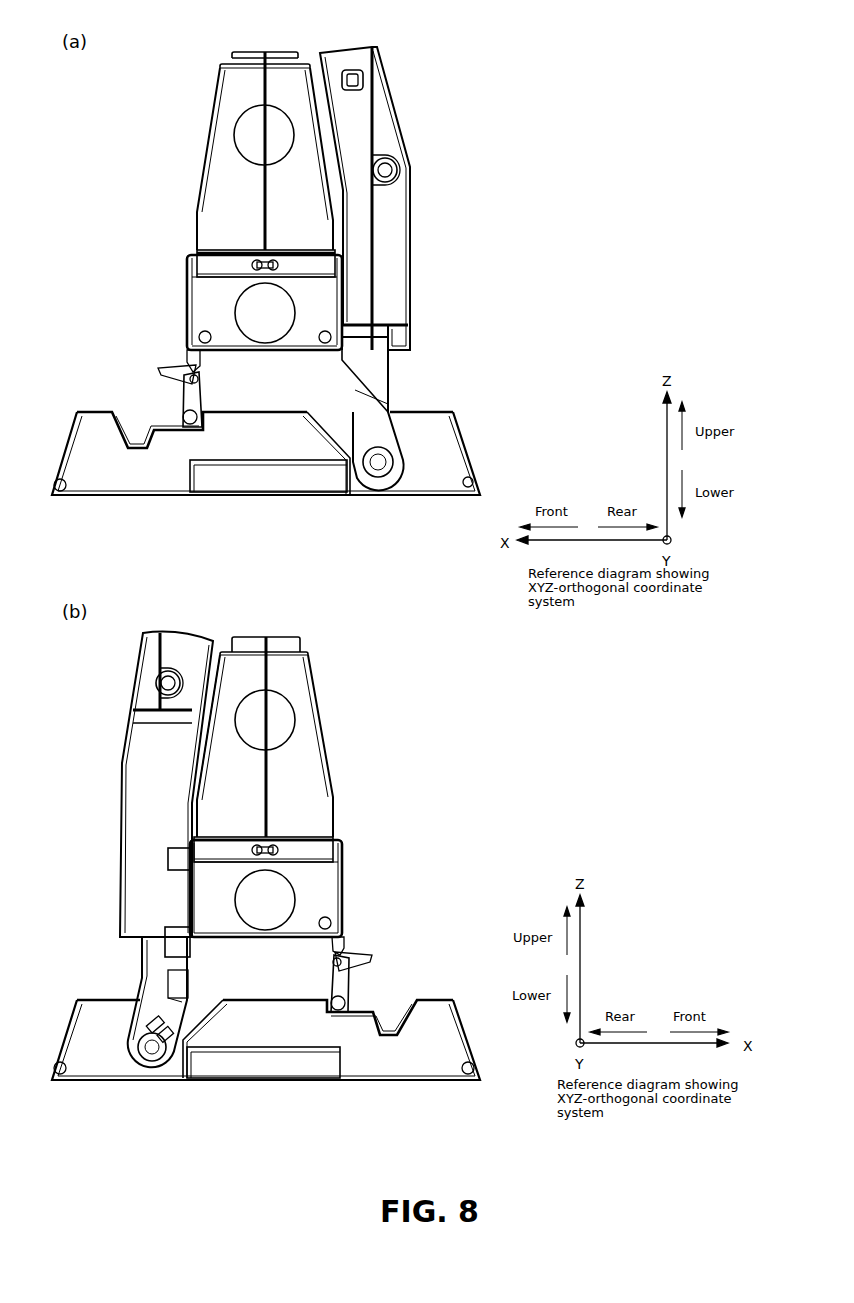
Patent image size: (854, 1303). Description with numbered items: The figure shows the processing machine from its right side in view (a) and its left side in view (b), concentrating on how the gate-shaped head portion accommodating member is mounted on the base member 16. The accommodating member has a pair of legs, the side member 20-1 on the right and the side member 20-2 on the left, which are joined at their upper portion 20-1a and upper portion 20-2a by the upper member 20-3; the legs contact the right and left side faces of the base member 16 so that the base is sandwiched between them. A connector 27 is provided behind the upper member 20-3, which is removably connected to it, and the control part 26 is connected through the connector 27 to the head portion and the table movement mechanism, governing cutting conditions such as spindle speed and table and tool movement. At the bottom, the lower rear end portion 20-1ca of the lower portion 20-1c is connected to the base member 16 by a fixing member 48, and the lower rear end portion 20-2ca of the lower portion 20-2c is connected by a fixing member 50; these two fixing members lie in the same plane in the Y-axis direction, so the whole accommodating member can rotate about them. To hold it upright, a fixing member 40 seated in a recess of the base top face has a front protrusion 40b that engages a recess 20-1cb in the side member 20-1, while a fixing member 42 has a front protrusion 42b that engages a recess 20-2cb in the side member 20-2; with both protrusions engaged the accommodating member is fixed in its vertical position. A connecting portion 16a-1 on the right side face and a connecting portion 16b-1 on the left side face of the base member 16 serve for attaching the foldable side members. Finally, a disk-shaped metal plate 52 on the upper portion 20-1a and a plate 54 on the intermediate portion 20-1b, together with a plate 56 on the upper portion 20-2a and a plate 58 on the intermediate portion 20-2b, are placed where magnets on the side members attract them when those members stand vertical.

The base member 16 is at (266, 478).
The connecting portion 16a-1 is at (233, 480).
The connecting portion 16b-1 is at (273, 1068).
The side member 20-1 is at (305, 298).
The upper portion 20-1a is at (215, 151).
The intermediate portion 20-1b is at (220, 302).
The lower portion 20-1c is at (447, 440).
The lower rear end portion 20-1ca is at (390, 445).
The recess 20-1cb is at (195, 364).
The side member 20-2 is at (260, 883).
The upper portion 20-2a is at (312, 737).
The intermediate portion 20-2b is at (308, 888).
The lower portion 20-2c is at (132, 1033).
The lower rear end portion 20-2ca is at (128, 1052).
The recess 20-2cb is at (338, 945).
The upper member 20-3 is at (198, 803).
The control part 26 is at (390, 125).
The connector 27 is at (138, 745).
The fixing member 40 is at (145, 396).
The front protrusion 40b is at (180, 373).
The fixing member 42 is at (386, 981).
The front protrusion 42b is at (360, 962).
The fixing member 48 is at (377, 467).
The fixing member 50 is at (152, 1057).
The disk-shaped metal plate 52 is at (250, 120).
The disk-shaped metal plate 54 is at (248, 313).
The disk-shaped metal plate 56 is at (280, 707).
The disk-shaped metal plate 58 is at (282, 898).